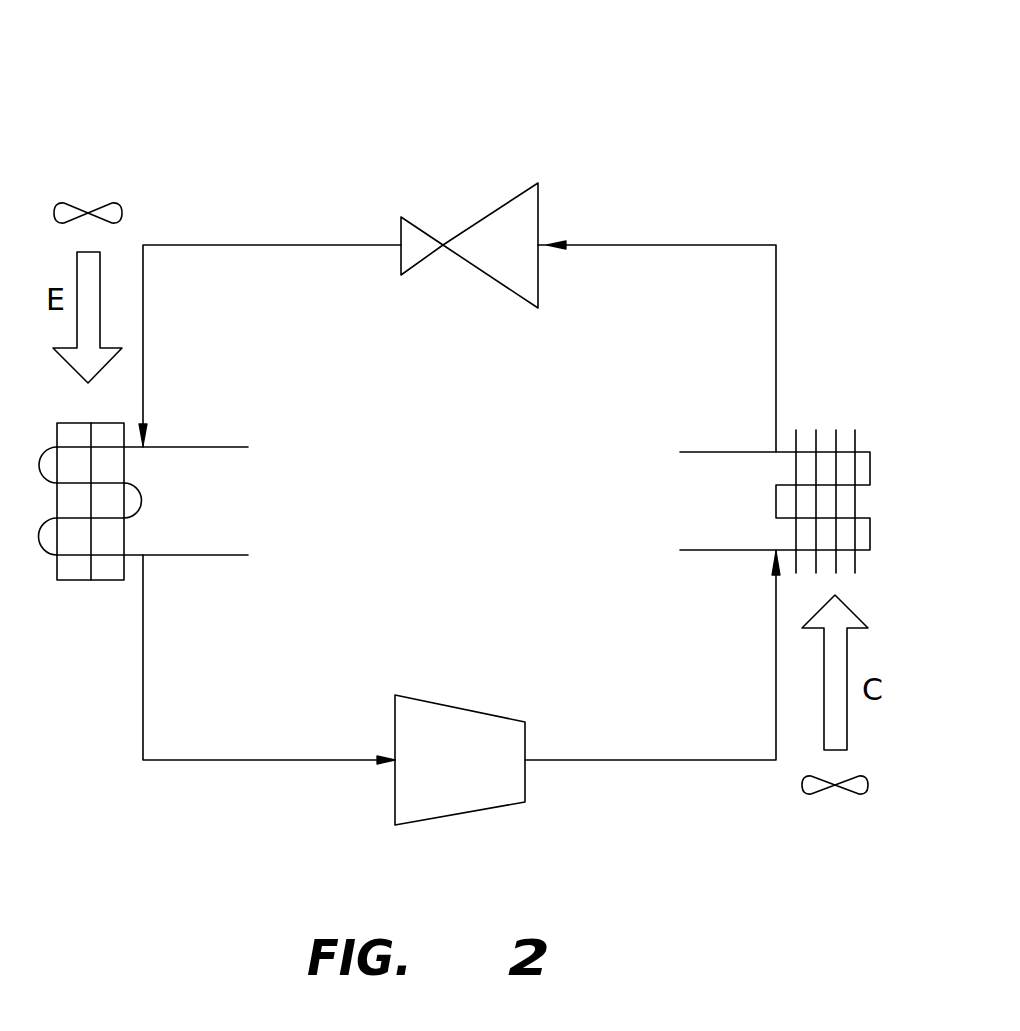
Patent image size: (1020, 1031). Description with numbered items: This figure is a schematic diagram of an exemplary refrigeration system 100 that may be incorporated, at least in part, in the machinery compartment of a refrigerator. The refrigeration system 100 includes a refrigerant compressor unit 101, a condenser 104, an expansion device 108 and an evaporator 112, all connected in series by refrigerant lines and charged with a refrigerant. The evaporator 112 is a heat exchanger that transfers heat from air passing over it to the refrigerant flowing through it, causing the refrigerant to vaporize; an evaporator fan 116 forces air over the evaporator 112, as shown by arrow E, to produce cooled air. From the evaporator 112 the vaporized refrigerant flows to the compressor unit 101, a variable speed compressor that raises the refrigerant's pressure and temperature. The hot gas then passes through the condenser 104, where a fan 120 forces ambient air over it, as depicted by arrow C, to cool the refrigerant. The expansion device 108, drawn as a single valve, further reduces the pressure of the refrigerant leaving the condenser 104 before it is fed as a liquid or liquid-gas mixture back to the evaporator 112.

The refrigeration system 100 is at (459, 384).
The refrigerant compressor unit 101 is at (480, 770).
The condenser 104 is at (732, 517).
The expansion device 108 is at (530, 259).
The evaporator 112 is at (227, 513).
The evaporator fan 116 is at (88, 193).
The fan 120 is at (831, 808).